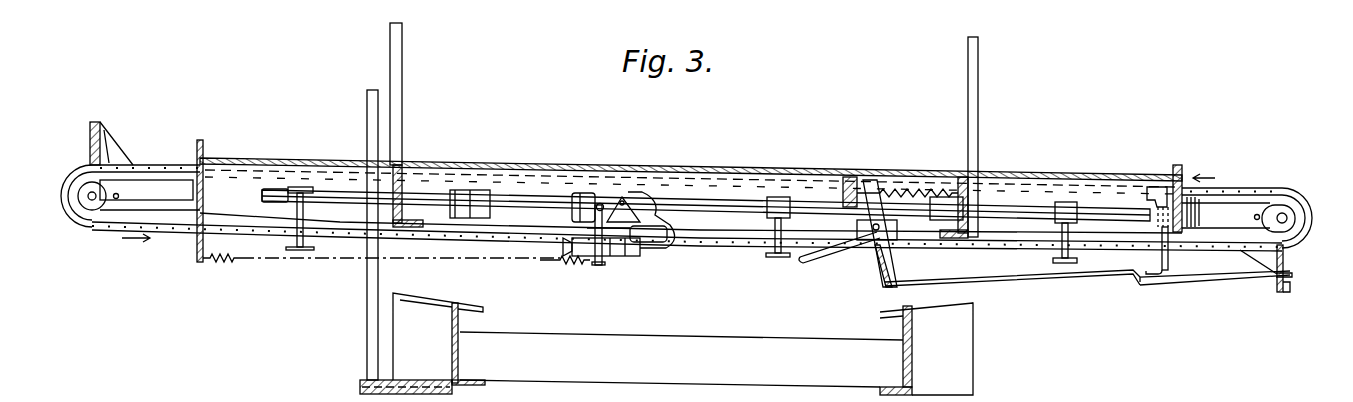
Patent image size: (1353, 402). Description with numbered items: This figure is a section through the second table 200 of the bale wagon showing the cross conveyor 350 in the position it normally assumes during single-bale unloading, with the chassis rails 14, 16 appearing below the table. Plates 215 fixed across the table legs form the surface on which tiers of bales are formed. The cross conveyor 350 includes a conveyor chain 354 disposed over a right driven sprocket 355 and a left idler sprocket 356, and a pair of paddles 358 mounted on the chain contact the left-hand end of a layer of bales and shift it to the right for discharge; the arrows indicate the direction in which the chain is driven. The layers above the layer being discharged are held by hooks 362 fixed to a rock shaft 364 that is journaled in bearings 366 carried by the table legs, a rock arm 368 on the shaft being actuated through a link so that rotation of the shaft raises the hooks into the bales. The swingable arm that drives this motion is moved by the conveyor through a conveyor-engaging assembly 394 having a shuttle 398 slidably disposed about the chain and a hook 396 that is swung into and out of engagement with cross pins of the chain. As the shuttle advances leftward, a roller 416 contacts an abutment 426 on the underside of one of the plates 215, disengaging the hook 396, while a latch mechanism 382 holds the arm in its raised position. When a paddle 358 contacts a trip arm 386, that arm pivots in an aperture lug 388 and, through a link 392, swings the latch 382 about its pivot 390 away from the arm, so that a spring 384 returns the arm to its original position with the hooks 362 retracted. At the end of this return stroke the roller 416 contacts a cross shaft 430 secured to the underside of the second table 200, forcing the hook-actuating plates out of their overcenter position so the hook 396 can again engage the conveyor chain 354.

The left longitudinally extending rail 14 is at (975, 354).
The right longitudinally extending rail 16 is at (407, 326).
The second table 200 is at (303, 148).
The plates 215 is at (745, 170).
The cross conveyor 350 is at (174, 155).
The conveyor chain 354 is at (1231, 188).
The right driven sprocket 355 is at (94, 209).
The left idler sprocket 356 is at (1283, 200).
The paddles 358 is at (112, 141).
The hooks 362 is at (290, 243).
The rock shaft 364 is at (1018, 205).
The bearings 366 is at (425, 173).
The rock arm 368 is at (507, 203).
The latch mechanism 382 is at (886, 273).
The spring 384 is at (337, 262).
The trip arm 386 is at (1192, 277).
The aperture lug 388 is at (1146, 186).
The pivot 390 is at (868, 242).
The link 392 is at (968, 274).
The conveyor-engaging assembly 394 is at (585, 276).
The hook 396 is at (663, 233).
The shuttle 398 is at (620, 253).
The roller 416 is at (624, 196).
The abutment 426 is at (836, 190).
The cross shaft 430 is at (600, 203).